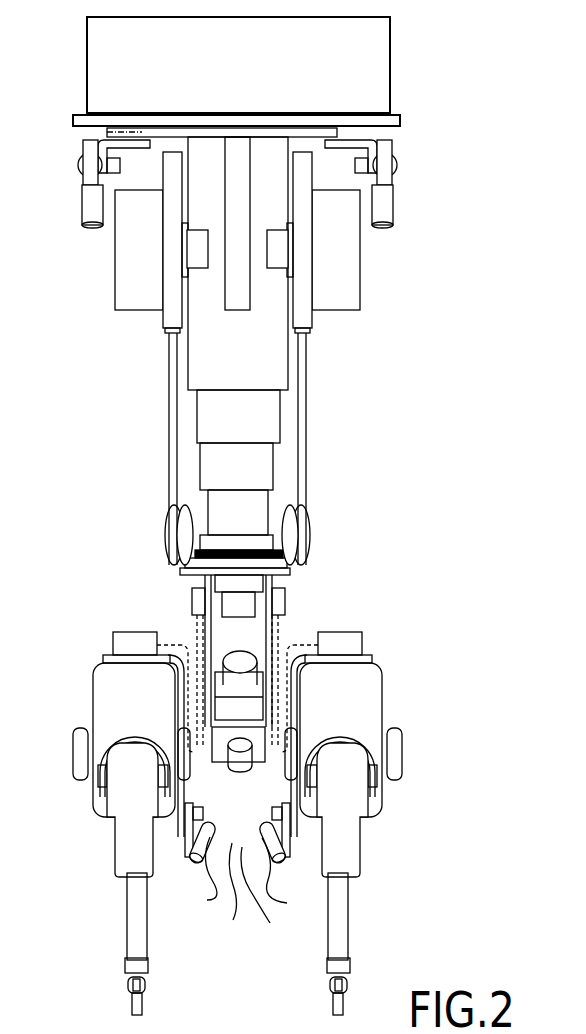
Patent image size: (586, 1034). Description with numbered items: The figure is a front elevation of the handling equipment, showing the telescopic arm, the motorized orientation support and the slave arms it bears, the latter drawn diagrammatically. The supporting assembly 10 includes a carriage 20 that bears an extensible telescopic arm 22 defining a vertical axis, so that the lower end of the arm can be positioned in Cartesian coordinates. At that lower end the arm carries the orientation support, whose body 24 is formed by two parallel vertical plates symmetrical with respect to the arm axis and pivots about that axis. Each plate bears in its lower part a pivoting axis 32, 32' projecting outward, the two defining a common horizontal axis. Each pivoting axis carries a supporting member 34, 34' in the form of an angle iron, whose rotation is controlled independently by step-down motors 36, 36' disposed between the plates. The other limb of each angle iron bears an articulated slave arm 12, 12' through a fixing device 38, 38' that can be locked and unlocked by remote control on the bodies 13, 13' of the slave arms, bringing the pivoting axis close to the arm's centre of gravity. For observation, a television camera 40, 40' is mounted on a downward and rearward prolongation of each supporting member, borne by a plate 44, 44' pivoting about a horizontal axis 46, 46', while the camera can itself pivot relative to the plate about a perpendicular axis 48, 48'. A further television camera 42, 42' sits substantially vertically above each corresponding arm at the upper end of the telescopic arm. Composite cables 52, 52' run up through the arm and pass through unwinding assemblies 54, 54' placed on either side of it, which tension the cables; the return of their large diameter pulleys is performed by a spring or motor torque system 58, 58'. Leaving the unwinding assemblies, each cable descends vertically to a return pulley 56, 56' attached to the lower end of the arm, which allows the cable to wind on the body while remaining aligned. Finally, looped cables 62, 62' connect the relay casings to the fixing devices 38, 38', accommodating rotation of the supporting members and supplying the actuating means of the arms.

The supporting assembly 10 is at (96, 390).
The articulated slave arm 12 is at (377, 879).
The articulated slave arm 12' is at (99, 879).
The body of slave arm 13 is at (367, 737).
The body of slave arm 13' is at (109, 737).
The carriage 20 is at (243, 85).
The telescopic arm 22 is at (292, 410).
The body 24 is at (290, 607).
The pivoting axis 32 is at (337, 740).
The pivoting axis 32' is at (138, 740).
The supporting member 34 is at (369, 737).
The supporting member 34' is at (106, 737).
The step-down motor 36 is at (295, 682).
The step-down motor 36' is at (183, 652).
The fixing device 38 is at (370, 626).
The fixing device 38' is at (108, 619).
The television camera 40 is at (291, 865).
The television camera 40' is at (185, 864).
The television camera 42 is at (386, 184).
The television camera 42' is at (83, 184).
The plate 44 is at (268, 902).
The plate 44' is at (223, 898).
The pivoting axis 46 is at (268, 818).
The pivoting axis 46' is at (214, 817).
The pivoting axis 48 is at (288, 888).
The pivoting axis 48' is at (198, 886).
The composite cable 52 is at (331, 449).
The composite cable 52' is at (143, 449).
The unwinding assembly 54 is at (338, 250).
The unwinding assembly 54' is at (130, 249).
The return pulley 56 is at (313, 534).
The return pulley 56' is at (164, 534).
The spring or motor torque system 58 is at (267, 287).
The spring or motor torque system 58' is at (214, 286).
The cable 62 is at (336, 657).
The cable 62' is at (157, 651).